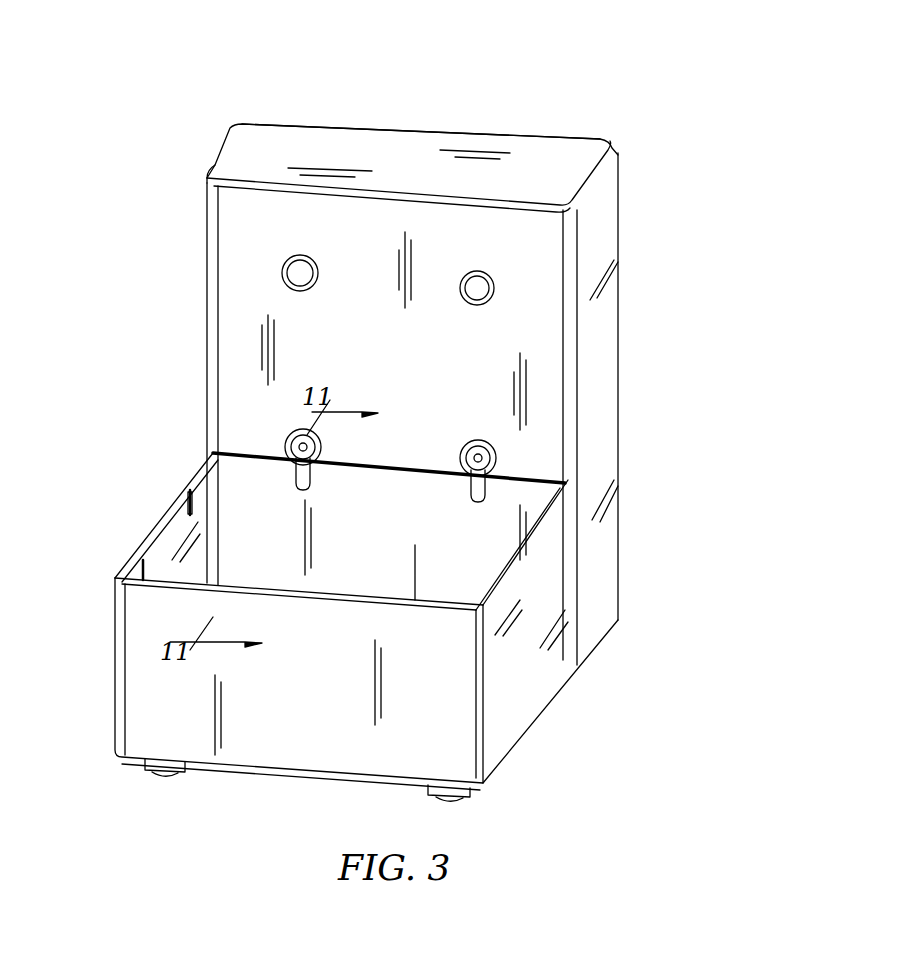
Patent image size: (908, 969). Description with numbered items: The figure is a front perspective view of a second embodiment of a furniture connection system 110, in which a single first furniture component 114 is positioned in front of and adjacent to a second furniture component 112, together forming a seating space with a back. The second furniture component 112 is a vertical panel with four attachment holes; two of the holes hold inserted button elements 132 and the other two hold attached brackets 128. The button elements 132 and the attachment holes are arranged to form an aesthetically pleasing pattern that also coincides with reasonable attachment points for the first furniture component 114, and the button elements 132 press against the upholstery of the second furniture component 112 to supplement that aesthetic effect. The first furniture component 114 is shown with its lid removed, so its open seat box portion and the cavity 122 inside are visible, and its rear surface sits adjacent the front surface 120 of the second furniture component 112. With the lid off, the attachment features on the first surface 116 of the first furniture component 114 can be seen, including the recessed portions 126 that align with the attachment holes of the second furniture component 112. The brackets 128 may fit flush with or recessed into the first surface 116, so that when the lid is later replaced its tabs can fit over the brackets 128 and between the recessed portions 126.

The furniture connection system 110 is at (788, 102).
The second furniture component 112 is at (620, 192).
The first furniture component 114 is at (553, 553).
The first surface 116 is at (445, 555).
The front surface 120 is at (492, 325).
The cavity 122 is at (270, 510).
The recessed portion 126 is at (188, 507).
The bracket 128 is at (510, 475).
The button element 132 is at (301, 272).